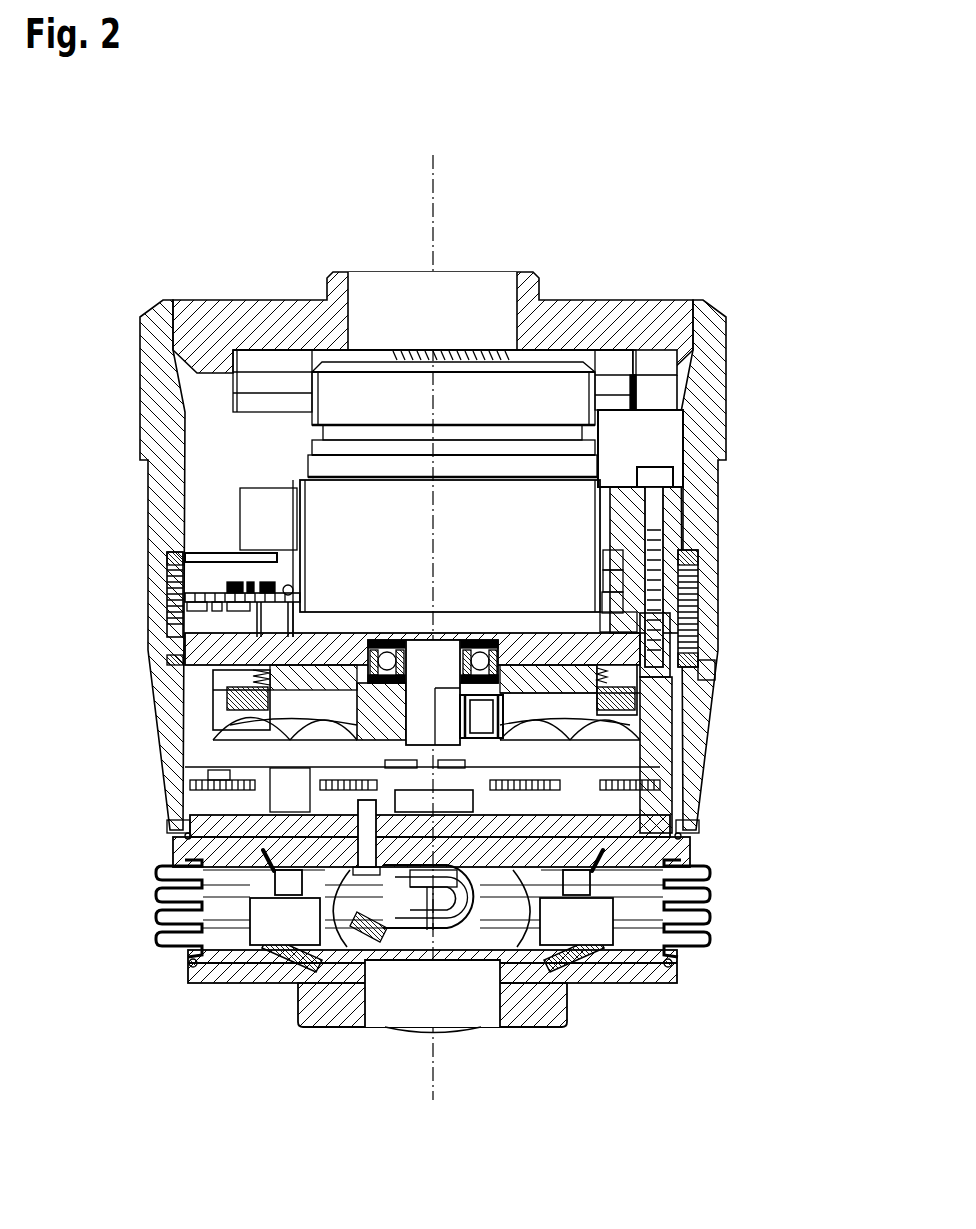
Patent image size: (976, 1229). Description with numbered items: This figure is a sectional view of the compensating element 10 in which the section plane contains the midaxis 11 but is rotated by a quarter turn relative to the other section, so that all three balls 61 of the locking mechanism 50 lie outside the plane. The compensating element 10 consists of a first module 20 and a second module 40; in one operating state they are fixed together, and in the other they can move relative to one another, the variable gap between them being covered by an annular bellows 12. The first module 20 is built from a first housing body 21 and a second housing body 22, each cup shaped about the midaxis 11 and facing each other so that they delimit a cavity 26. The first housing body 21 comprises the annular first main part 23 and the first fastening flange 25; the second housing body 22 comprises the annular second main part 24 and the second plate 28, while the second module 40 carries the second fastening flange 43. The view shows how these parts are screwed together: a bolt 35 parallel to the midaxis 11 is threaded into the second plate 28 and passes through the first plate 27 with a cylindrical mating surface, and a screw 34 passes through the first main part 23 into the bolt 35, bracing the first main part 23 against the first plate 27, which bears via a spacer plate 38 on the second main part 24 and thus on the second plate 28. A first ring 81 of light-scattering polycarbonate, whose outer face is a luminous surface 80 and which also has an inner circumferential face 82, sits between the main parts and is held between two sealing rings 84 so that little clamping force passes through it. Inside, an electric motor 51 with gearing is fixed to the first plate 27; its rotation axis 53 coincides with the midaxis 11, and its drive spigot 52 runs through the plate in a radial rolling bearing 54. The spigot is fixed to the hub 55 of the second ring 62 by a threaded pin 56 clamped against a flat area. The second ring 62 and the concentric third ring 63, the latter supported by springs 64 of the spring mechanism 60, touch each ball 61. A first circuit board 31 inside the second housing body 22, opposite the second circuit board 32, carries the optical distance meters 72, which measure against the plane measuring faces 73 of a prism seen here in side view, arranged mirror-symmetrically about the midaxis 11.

The compensating element 10 is at (217, 183).
The midaxis 11 is at (436, 158).
The bellows 12 is at (713, 940).
The first module 20 is at (480, 521).
The first housing body 21 is at (480, 521).
The second housing body 22 is at (736, 755).
The first main part 23 is at (716, 320).
The second main part 24 is at (668, 800).
The first fastening flange 25 is at (668, 302).
The cavity 26 is at (660, 433).
The first plate 27 is at (548, 643).
The second plate 28 is at (683, 853).
The first circuit board 31 is at (225, 790).
The second circuit board 32 is at (175, 577).
The screw 34 is at (660, 477).
The bolt 35 is at (700, 822).
The spacer plate 38 is at (712, 672).
The second module 40 is at (343, 1013).
The second fastening flange 43 is at (330, 1008).
The locking mechanism 50 is at (198, 697).
The electric motor 51 is at (322, 518).
The drive spigot 52 is at (420, 700).
The rotation axis of the electric motor 53 is at (475, 608).
The radial rolling bearing 54 is at (395, 700).
The hub 55 is at (417, 905).
The threaded pin 56 is at (470, 762).
The spring mechanism 60 is at (154, 715).
The ball 61 is at (245, 752).
The second ring 62 is at (262, 688).
The third ring 63 is at (235, 712).
The spring 64 is at (640, 697).
The optical distance meter 72 is at (470, 905).
The measuring face 73 is at (360, 975).
The luminous surface 80 is at (185, 600).
The first ring 81 is at (200, 625).
The inner circumferential face of the first ring 82 is at (700, 578).
The sealing ring 84 is at (700, 556).